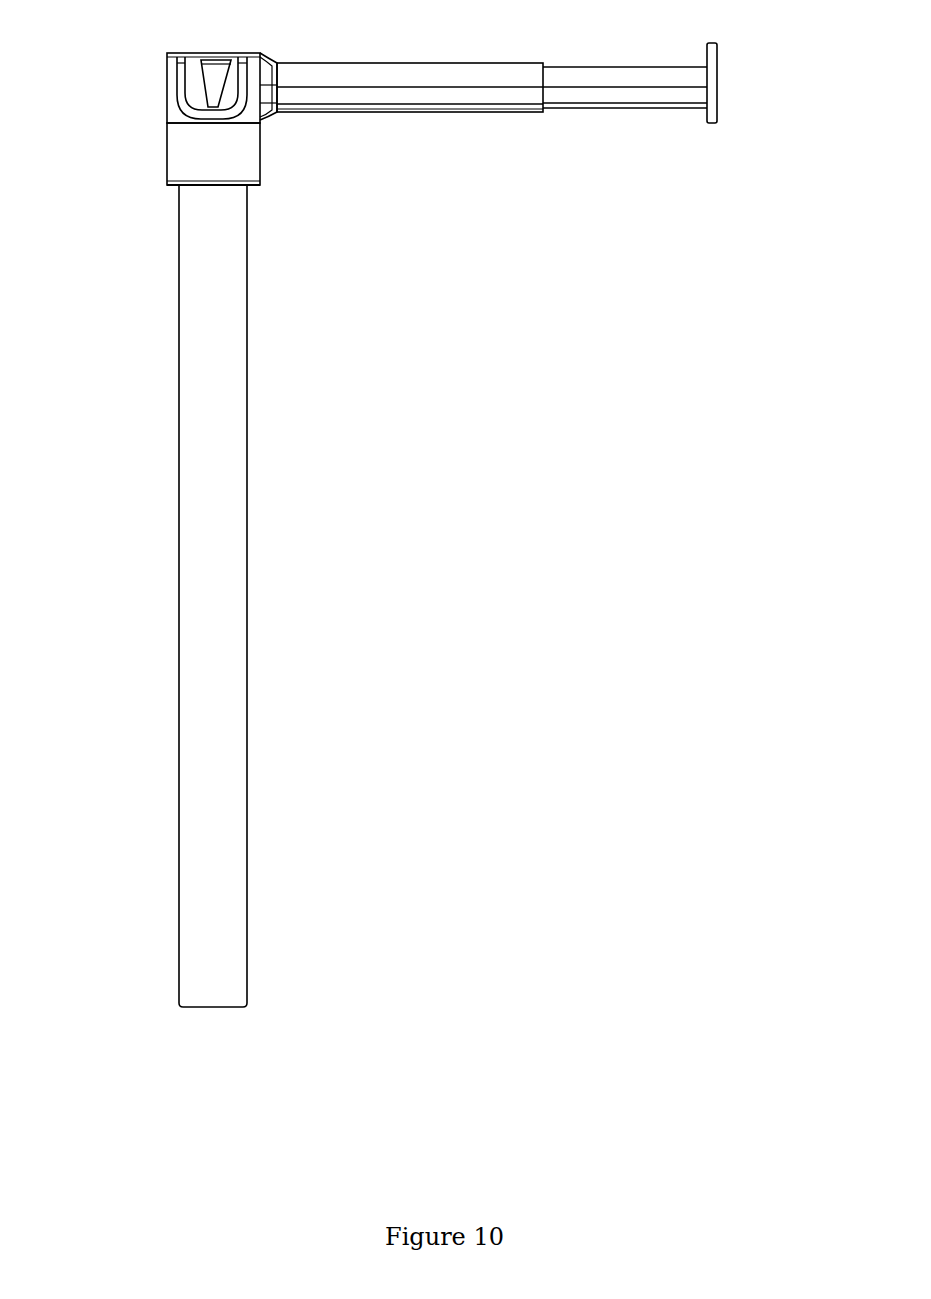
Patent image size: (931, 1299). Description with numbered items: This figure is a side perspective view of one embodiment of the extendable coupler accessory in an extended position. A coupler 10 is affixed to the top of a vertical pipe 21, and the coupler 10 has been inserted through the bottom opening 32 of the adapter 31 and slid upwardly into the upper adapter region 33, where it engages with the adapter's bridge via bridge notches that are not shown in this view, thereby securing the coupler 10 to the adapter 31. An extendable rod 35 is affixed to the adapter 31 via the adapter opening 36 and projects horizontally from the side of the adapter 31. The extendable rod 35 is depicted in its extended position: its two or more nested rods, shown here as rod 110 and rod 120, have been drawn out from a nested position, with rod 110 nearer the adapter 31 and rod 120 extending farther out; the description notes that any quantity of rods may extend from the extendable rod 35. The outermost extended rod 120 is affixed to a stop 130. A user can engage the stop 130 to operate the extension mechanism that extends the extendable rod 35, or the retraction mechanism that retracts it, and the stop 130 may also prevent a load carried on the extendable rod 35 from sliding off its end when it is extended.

The coupler 10 is at (197, 85).
The vertical pipe 21 is at (217, 562).
The adapter 31 is at (190, 143).
The bottom opening 32 is at (215, 188).
The upper adapter region 33 is at (170, 103).
The extendable rod 35 is at (497, 112).
The adapter opening 36 is at (279, 64).
The rod 110 is at (372, 85).
The rod 120 is at (583, 82).
The stop 130 is at (715, 67).